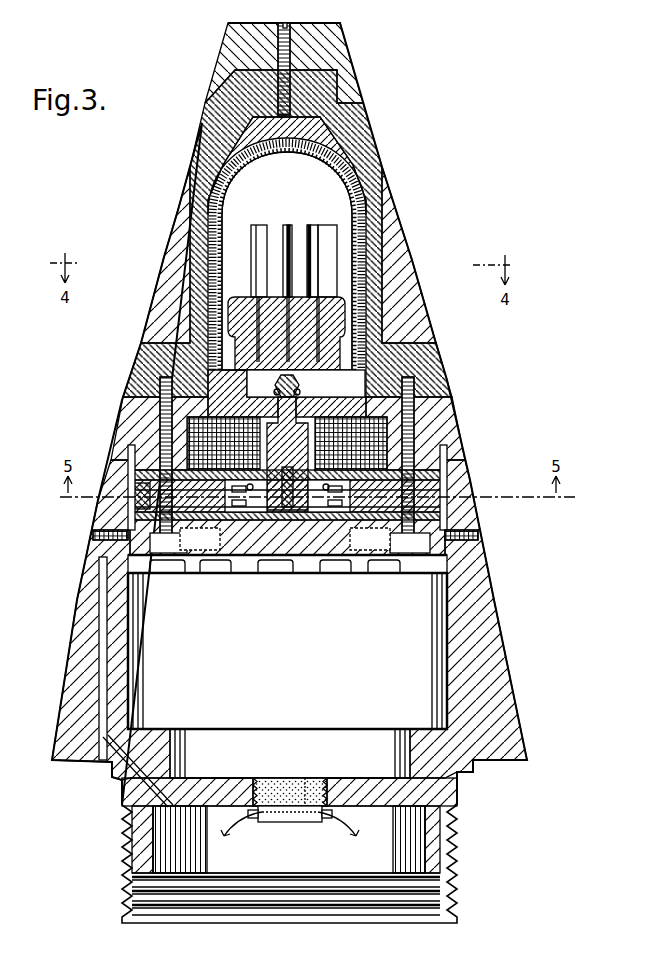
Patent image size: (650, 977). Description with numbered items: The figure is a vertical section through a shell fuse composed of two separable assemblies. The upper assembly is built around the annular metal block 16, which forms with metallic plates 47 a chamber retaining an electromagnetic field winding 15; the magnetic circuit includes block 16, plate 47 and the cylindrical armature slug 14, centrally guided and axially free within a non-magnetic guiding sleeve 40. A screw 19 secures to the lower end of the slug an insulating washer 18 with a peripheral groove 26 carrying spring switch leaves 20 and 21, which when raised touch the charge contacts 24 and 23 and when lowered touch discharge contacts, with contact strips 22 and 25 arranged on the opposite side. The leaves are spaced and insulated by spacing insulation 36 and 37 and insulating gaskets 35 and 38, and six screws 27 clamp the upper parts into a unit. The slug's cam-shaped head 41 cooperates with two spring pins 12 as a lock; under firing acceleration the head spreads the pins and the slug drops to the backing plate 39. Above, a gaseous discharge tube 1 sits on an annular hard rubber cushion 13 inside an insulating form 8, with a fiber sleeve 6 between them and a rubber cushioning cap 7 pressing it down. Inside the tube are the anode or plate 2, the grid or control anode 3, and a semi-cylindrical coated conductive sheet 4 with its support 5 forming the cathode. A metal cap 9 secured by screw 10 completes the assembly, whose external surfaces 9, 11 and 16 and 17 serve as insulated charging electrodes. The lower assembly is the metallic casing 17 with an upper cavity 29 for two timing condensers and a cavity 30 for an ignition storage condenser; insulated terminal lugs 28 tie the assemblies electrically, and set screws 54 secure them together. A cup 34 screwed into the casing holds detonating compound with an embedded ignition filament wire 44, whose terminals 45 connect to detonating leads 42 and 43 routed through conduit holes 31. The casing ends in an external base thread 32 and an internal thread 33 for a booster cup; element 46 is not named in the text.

The gaseous discharge tube 1 is at (352, 185).
The anode or plate 2 is at (254, 226).
The grid or control anode 3 is at (288, 226).
The semi-cylindrical coated conductive sheet 4 is at (312, 226).
The cathode support 5 is at (326, 226).
The sleeve or tube 6 is at (208, 207).
The rubber cushioning cap 7 is at (355, 155).
The insulating form 8 is at (205, 120).
The metal cap 9 is at (338, 55).
The screw 10 is at (291, 32).
The external metal surface 11 is at (168, 258).
The spring pins 12 is at (263, 370).
The annular hard rubber cushion 13 is at (237, 372).
The cylindrical armature slug 14 is at (275, 430).
The electromagnetic field winding 15 is at (416, 392).
The annular metal block 16 is at (126, 416).
The metallic casing 17 is at (112, 512).
The insulating washer 18 is at (285, 550).
The screw 19 is at (285, 505).
The spring switch leaf 20 is at (135, 490).
The spring switch leaf 21 is at (302, 500).
The contact strip 22 is at (320, 510).
The charge contact 23 is at (351, 443).
The charge contact 24 is at (224, 443).
The discharge contact 25 is at (240, 494).
The peripheral groove 26 is at (262, 506).
The screws 27 is at (166, 573).
The insulated terminal lugs 28 is at (208, 573).
The upper cavity 29 is at (440, 618).
The cavity 30 is at (372, 800).
The conduit holes 31 is at (100, 583).
The external base thread 32 is at (123, 873).
The internal thread 33 is at (170, 920).
The cup 34 is at (286, 822).
The insulating gasket 35 is at (447, 474).
The spacing insulation 36 is at (447, 486).
The spacing insulation 37 is at (447, 498).
The insulating gasket 38 is at (447, 518).
The backing plate 39 is at (152, 545).
The non-magnetic guiding sleeve 40 is at (298, 385).
The cam-shaped head 41 is at (290, 380).
The detonating lead 42 is at (236, 837).
The detonating lead 43 is at (340, 837).
The ignition filament wire 44 is at (305, 822).
The ignition wire terminals 45 is at (312, 779).
The filler 46 is at (290, 779).
The metallic plates 47 is at (130, 458).
The set screws 54 is at (93, 536).